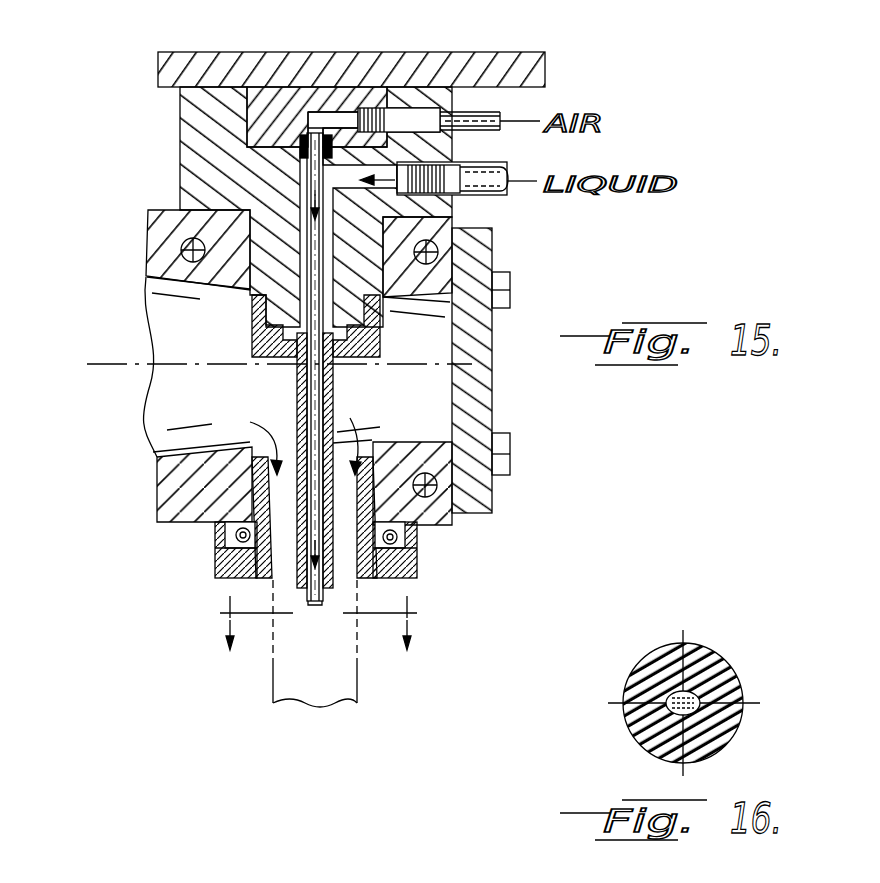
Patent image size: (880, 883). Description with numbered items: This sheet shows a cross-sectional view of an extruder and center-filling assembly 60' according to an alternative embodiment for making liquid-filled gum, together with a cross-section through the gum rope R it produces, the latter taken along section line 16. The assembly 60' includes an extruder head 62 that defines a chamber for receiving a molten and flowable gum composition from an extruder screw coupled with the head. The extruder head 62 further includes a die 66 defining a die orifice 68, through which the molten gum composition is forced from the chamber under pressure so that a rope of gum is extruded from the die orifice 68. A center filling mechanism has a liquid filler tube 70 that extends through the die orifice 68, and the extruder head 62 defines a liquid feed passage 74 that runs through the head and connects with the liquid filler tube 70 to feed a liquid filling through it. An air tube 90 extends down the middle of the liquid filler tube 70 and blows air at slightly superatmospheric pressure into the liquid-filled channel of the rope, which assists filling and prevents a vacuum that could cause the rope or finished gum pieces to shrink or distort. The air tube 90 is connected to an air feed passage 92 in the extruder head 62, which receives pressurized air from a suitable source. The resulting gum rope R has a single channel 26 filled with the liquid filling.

In FIG. 15, the extruder and center-filling assembly 60' is at (279, 306).
In FIG. 15, the extruder head 62 is at (152, 244).
In FIG. 15, the die 66 is at (374, 514).
In FIG. 15, the die orifice 68 is at (289, 582).
In FIG. 15, the liquid filler tube 70 is at (334, 388).
In FIG. 15, the liquid feed passage 74 is at (488, 200).
In FIG. 15, the air tube 90 is at (313, 422).
In FIG. 15, the air feed passage 92 is at (408, 108).
In FIG. 15, the section line 16- 16 is at (326, 643).
In FIG. 16, the gum rope R is at (728, 651).
In FIG. 16, the channel 26 is at (673, 715).